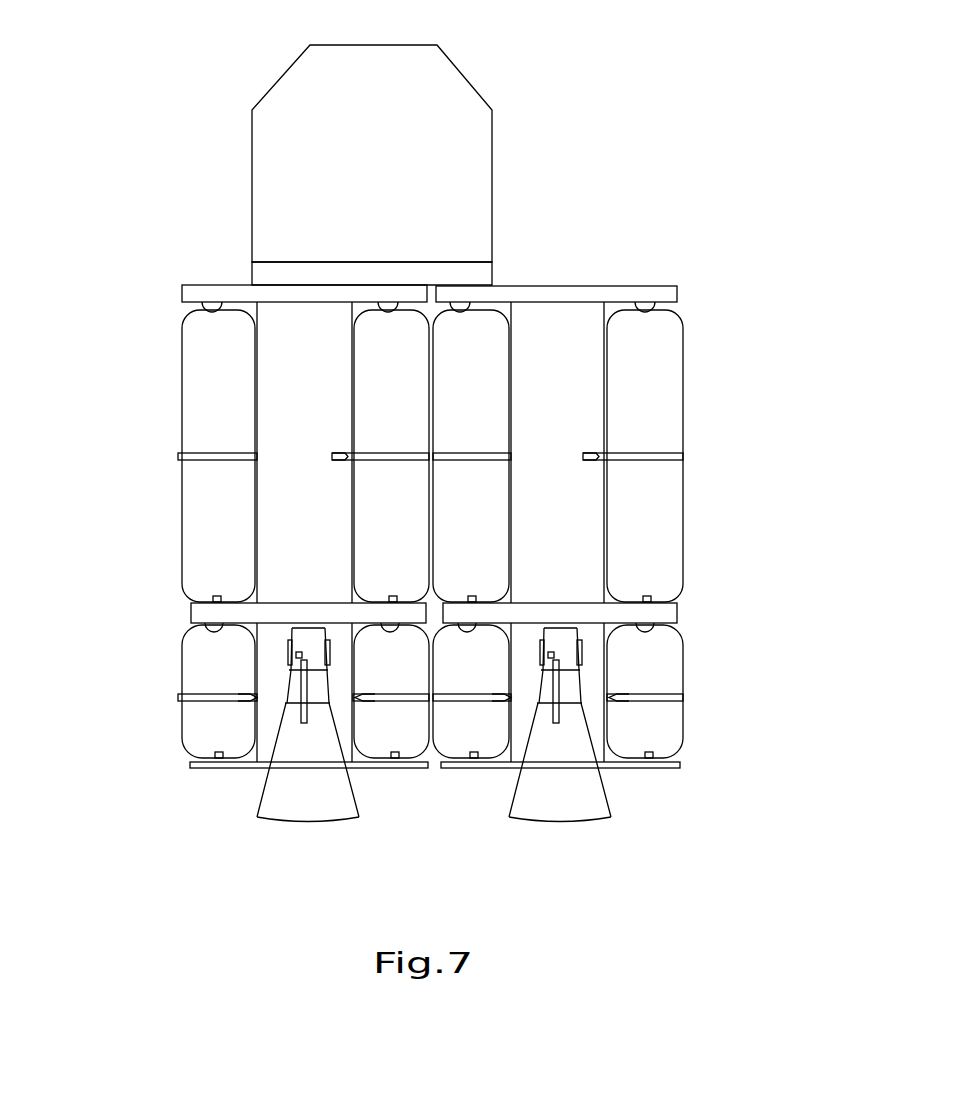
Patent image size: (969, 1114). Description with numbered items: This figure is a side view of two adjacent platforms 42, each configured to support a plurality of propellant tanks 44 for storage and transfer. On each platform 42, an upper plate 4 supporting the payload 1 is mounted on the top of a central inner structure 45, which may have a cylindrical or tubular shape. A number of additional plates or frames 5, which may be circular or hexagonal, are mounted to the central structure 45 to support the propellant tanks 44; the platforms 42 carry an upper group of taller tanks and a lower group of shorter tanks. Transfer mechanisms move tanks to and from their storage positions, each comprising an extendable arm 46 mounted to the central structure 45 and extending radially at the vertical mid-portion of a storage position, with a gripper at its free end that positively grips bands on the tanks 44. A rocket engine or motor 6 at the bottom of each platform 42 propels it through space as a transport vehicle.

The payload 1 is at (478, 92).
The upper plate 4 is at (213, 292).
The platform 42 is at (167, 413).
The propellant tank 44 is at (215, 552).
The central inner structure 45 is at (293, 367).
The extendable arm 46 is at (340, 460).
The lower plate 5 is at (190, 612).
The rocket engine or motor 6 is at (350, 816).